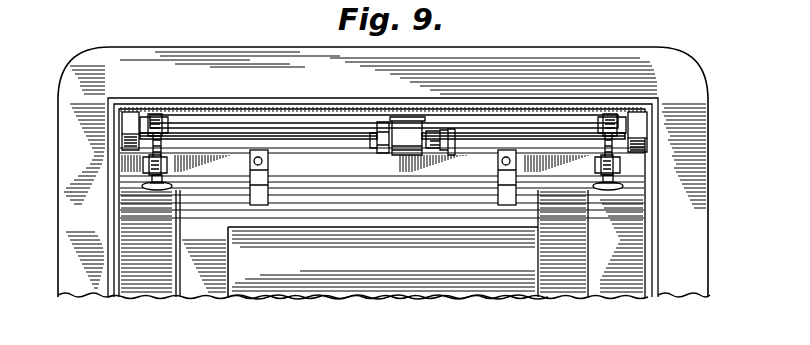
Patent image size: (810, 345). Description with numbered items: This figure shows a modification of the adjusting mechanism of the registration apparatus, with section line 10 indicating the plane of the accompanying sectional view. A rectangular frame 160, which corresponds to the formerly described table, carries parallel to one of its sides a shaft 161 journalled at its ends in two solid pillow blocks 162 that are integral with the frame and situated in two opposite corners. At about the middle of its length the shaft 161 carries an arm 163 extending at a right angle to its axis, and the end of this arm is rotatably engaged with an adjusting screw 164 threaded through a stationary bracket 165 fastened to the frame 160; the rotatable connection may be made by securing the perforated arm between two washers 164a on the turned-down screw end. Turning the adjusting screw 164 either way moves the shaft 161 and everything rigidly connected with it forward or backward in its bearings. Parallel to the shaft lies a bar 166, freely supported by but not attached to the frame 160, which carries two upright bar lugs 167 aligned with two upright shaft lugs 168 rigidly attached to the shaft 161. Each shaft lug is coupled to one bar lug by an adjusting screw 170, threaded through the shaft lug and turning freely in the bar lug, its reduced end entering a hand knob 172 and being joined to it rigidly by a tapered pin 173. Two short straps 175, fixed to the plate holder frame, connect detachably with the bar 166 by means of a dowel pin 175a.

The section line 10 is at (526, 23).
The rectangular frame 160 is at (595, 105).
The shaft 161 is at (540, 118).
The pillow blocks 162 is at (128, 114).
The arm 163 is at (381, 121).
The adjusting screw 164 is at (452, 156).
The washers 164a is at (392, 155).
The stationary bracket 165 is at (413, 117).
The bar 166 is at (382, 160).
The bar lugs 167 is at (123, 165).
The shaft lugs 168 is at (162, 116).
The adjusting screws 170 is at (153, 143).
The hand knob 172 is at (170, 178).
The tapered pin 173 is at (150, 181).
The straps 175 is at (266, 195).
The dowel pin 175a is at (248, 178).